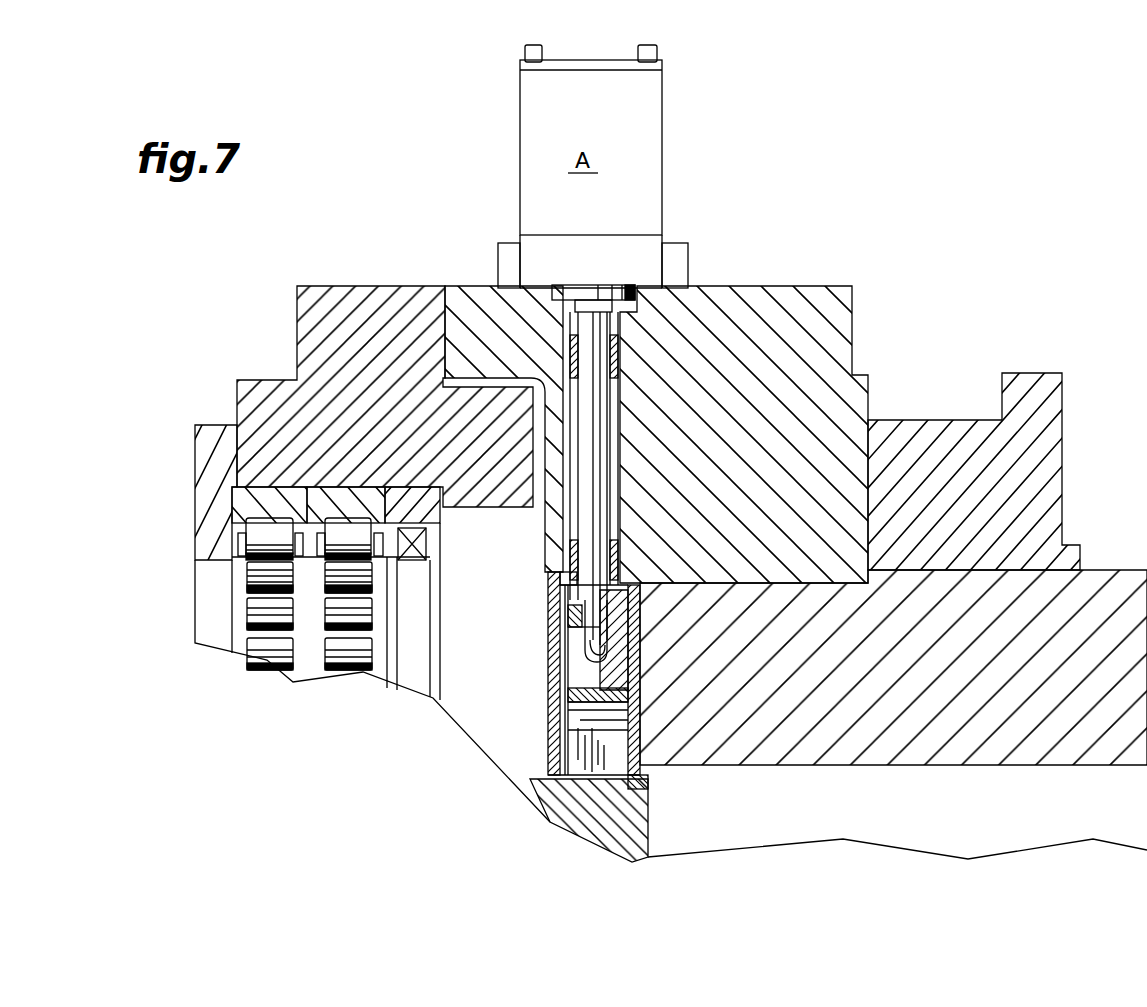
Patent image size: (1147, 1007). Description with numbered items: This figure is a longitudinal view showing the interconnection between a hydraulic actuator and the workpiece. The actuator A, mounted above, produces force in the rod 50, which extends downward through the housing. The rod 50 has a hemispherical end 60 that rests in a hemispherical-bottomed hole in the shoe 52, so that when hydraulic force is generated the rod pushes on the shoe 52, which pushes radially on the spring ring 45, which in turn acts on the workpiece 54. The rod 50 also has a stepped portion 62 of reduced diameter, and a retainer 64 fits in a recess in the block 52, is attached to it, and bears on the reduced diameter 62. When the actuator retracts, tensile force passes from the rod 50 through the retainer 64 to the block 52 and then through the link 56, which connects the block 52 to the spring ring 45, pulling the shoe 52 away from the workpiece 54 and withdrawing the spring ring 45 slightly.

The spring ring 45 is at (593, 750).
The rod 50 is at (583, 315).
The shoe 52 is at (613, 668).
The workpiece 54 is at (580, 815).
The link 56 is at (570, 692).
The hemispherical end 60 is at (573, 652).
The stepped portion 62 is at (573, 645).
The retainer 64 is at (558, 624).